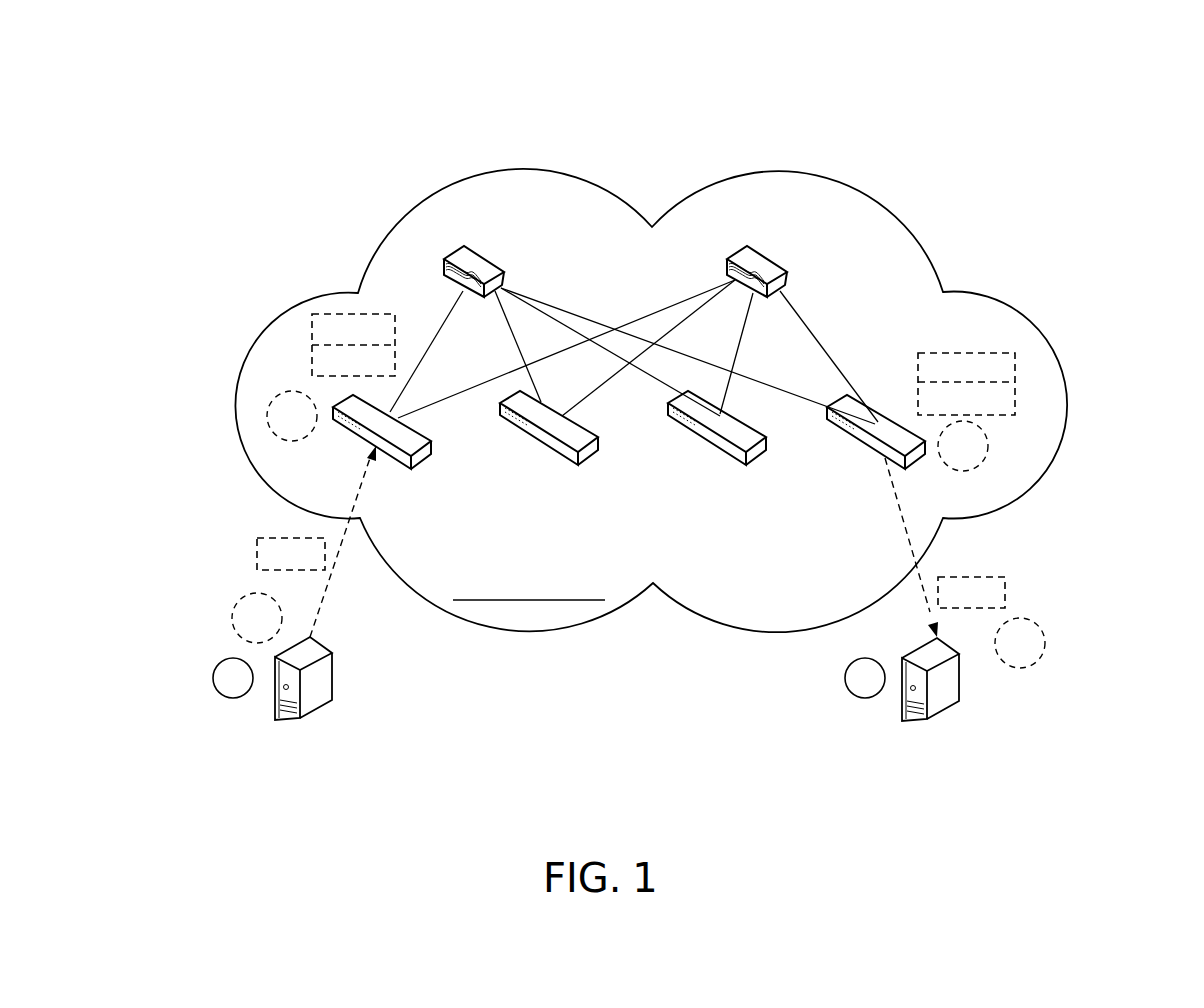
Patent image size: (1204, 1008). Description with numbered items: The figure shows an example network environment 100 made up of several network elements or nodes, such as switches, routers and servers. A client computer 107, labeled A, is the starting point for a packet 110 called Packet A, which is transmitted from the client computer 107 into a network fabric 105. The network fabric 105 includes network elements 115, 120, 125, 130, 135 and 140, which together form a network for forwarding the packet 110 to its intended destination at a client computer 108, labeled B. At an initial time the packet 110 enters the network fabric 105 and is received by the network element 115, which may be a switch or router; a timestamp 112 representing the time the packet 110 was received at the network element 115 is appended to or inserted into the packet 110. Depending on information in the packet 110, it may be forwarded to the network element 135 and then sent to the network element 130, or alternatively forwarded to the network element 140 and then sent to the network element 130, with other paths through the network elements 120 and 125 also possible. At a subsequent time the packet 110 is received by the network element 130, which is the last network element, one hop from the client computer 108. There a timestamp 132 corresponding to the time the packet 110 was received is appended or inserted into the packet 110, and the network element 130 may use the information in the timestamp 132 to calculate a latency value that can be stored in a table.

The network environment 100 is at (1160, 112).
The network fabric 105 is at (651, 400).
The client computer 107 is at (298, 722).
The client computer 108 is at (934, 722).
The packet 110 is at (342, 313).
The timestamp 112 is at (312, 360).
The network element 115 is at (330, 400).
The network element 120 is at (542, 447).
The network element 125 is at (713, 447).
The network element 130 is at (875, 452).
The timestamp 132 is at (917, 400).
The network element 135 is at (481, 251).
The network element 140 is at (766, 251).